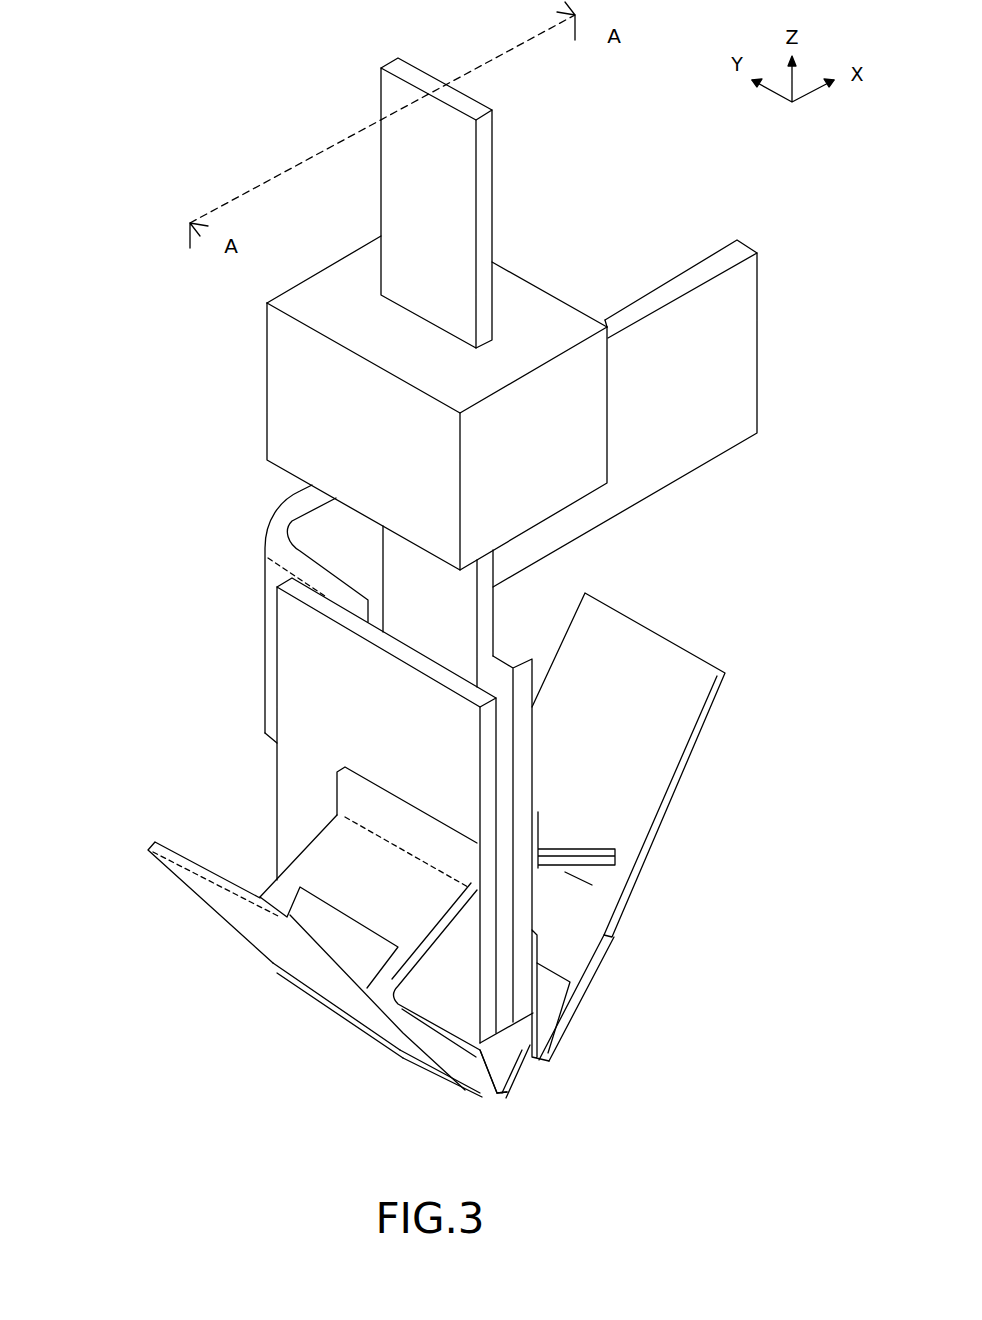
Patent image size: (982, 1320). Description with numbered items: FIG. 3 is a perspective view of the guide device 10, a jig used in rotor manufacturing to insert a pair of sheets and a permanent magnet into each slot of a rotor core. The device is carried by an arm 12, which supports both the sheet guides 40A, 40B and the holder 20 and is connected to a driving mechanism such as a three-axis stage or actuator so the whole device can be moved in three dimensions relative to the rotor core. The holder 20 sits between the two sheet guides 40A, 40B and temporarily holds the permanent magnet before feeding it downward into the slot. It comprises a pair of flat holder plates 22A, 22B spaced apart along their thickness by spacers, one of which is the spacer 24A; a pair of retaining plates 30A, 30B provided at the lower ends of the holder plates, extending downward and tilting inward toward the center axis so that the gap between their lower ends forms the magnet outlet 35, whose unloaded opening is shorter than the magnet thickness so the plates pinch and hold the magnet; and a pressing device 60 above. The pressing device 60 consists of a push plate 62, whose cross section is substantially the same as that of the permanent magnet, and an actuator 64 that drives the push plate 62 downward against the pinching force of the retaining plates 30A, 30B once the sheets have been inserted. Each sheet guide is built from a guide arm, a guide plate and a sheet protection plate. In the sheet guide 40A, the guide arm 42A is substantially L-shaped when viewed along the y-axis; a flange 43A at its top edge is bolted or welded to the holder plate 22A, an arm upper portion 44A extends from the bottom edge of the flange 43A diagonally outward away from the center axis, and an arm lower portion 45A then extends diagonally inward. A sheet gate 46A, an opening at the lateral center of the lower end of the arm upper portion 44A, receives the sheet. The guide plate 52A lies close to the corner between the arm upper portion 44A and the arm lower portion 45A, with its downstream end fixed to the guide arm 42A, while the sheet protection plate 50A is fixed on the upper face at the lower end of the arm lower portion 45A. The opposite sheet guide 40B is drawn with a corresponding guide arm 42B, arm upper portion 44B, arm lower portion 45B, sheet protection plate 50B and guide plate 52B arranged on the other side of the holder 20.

The guide device 10 is at (92, 120).
The arm 12 is at (637, 296).
The holder 20 is at (213, 719).
The holder plate 22A is at (300, 652).
The holder plate 22B is at (512, 655).
The spacer 24A is at (505, 712).
The retaining plate 30A is at (493, 1090).
The retaining plate 30B is at (522, 1079).
The magnet outlet 35 is at (520, 1097).
The sheet guide 40A is at (208, 982).
The sheet guide 40B is at (667, 911).
The guide arm 42A is at (438, 878).
The second base portion 42B is at (632, 853).
The flange 43A is at (383, 820).
The arm upper portion 44A is at (327, 832).
The second extending portion 44B is at (572, 843).
The arm lower portion 45A is at (423, 1057).
The second elastic portion 45B is at (588, 923).
The sheet gate 46A is at (273, 888).
The sheet protection plate 50A is at (462, 1058).
The second arm portion 50B is at (563, 993).
The guide plate 52A is at (195, 860).
The second plate portion 52B is at (697, 685).
The pressing device 60 is at (205, 347).
The push plate 62 is at (487, 200).
The actuator 64 is at (300, 423).